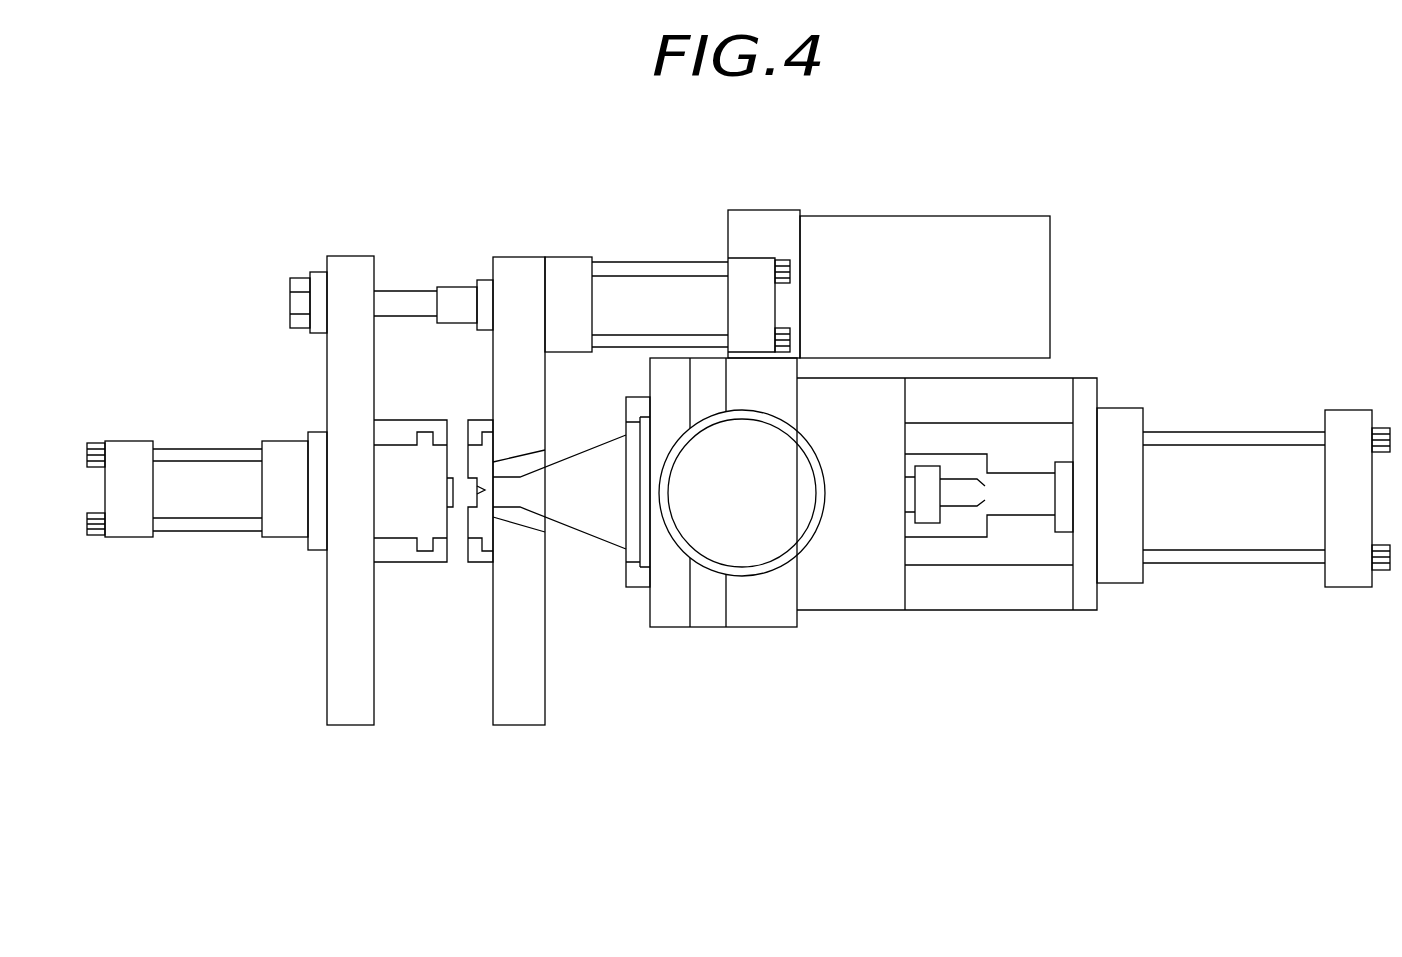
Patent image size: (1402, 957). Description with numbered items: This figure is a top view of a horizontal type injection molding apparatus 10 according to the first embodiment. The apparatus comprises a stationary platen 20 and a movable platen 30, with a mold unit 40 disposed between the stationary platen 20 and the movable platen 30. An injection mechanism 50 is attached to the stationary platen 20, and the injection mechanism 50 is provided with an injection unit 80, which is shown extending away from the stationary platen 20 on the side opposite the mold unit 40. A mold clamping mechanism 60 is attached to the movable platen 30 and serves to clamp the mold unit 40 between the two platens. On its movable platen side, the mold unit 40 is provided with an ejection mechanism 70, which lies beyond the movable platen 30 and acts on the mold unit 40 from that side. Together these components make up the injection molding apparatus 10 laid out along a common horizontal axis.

The injection molding apparatus 10 is at (822, 203).
The stationary platen 20 is at (535, 712).
The movable platen 30 is at (337, 700).
The mold unit 40 is at (443, 564).
The injection mechanism 50 is at (588, 549).
The mold clamping mechanism 60 is at (420, 275).
The ejection mechanism 70 is at (210, 444).
The injection unit 80 is at (1238, 423).